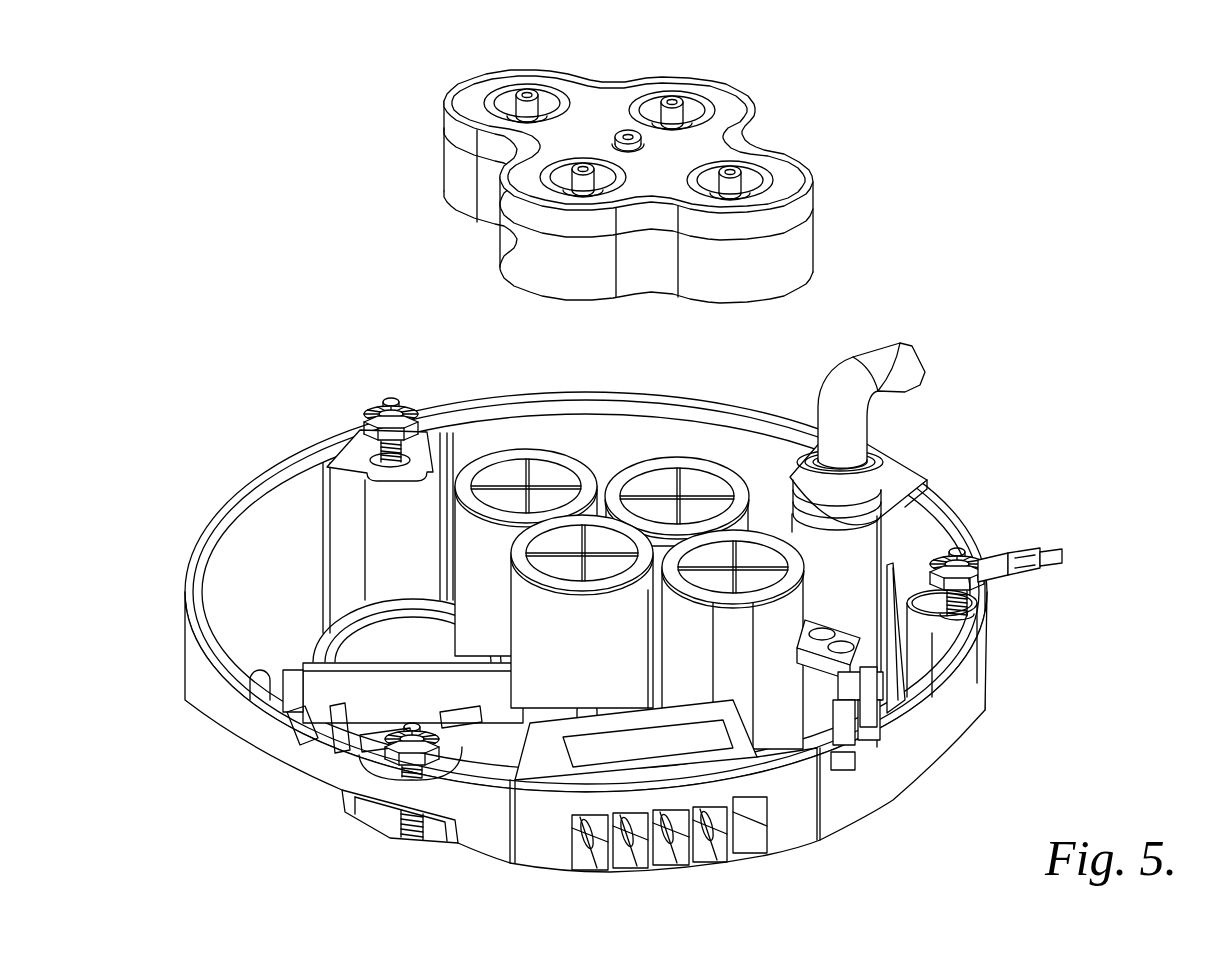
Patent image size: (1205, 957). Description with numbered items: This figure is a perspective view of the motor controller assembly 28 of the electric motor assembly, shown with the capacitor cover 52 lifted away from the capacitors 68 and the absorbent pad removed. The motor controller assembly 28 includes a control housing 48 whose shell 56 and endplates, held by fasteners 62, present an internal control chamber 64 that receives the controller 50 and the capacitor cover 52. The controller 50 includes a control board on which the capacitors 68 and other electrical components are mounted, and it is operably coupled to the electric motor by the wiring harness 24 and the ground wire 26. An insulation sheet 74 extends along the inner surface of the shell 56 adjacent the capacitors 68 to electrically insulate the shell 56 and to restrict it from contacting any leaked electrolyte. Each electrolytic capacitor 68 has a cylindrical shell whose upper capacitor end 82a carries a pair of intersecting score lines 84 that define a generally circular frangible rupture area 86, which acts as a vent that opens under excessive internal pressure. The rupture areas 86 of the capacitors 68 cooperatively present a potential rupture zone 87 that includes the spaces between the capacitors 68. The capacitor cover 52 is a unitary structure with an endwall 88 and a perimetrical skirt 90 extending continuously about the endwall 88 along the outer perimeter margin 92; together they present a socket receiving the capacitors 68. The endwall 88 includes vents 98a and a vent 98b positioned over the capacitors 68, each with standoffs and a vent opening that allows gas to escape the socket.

The wiring harness 24 is at (905, 368).
The ground wire 26 is at (1060, 555).
The motor controller assembly 28 is at (237, 277).
The control housing 48 is at (975, 688).
The controller 50 is at (785, 715).
The capacitor cover 52 is at (785, 178).
The shell 56 is at (238, 725).
The fasteners 62 is at (1005, 500).
The internal control chamber 64 is at (925, 520).
The capacitors 68 is at (522, 593).
The insulation sheet 74 is at (462, 440).
The upper capacitor end 82a is at (553, 378).
The score lines 84 is at (555, 472).
The frangible rupture area 86 is at (520, 470).
The potential rupture zone 87 is at (672, 450).
The endwall 88 is at (597, 100).
The perimetrical skirt 90 is at (805, 258).
The outer perimeter margin 92 is at (815, 230).
The vent 98a is at (520, 95).
The vent 98b is at (628, 132).